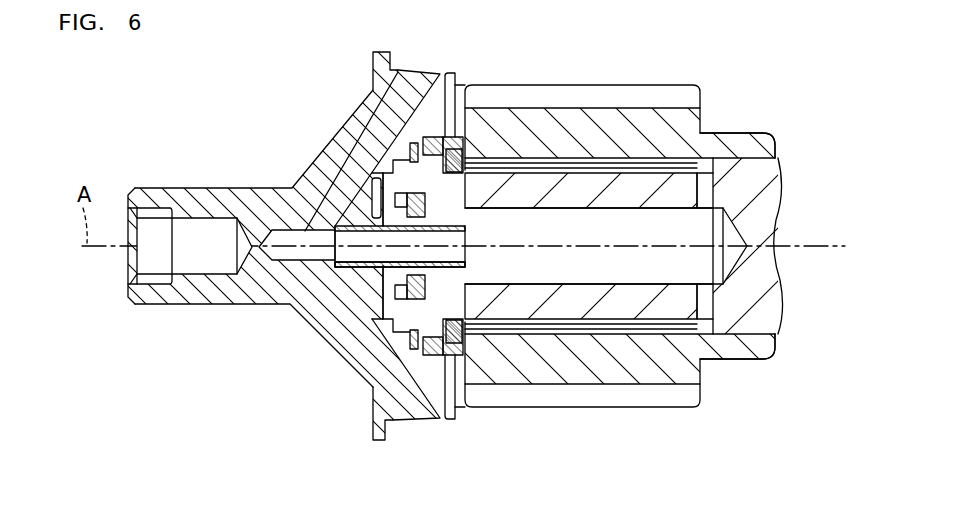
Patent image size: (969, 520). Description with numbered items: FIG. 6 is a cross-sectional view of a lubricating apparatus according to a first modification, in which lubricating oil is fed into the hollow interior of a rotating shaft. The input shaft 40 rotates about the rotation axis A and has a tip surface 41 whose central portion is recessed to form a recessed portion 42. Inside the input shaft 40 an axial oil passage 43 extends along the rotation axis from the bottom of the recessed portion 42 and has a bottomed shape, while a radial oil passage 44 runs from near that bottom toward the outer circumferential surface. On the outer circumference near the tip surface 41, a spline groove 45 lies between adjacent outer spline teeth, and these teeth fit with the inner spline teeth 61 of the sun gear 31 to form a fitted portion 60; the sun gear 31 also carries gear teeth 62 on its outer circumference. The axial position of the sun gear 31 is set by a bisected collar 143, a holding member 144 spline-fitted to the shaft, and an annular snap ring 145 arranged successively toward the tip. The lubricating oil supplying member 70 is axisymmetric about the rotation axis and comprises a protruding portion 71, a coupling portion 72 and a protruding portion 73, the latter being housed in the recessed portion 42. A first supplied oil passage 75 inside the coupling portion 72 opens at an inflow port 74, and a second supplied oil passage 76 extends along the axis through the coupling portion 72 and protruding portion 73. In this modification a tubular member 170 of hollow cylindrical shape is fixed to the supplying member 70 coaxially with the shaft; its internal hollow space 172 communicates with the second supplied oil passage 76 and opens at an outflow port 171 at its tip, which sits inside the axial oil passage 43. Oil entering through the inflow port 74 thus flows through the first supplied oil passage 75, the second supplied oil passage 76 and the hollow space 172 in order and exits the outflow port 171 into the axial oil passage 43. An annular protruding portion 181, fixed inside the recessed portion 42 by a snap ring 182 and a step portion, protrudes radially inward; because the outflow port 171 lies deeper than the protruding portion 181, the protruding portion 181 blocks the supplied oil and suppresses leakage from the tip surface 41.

The sun gear 31 is at (641, 137).
The input shaft 40 is at (763, 222).
The tip surface 41 is at (378, 348).
The recessed portion 42 is at (394, 276).
The axial oil passage 43 is at (692, 263).
The radial oil passage 44 is at (705, 190).
The spline groove 45 is at (692, 157).
The fitted portion 60 is at (532, 152).
The inner spline teeth 61 is at (604, 158).
The gear teeth 62 is at (560, 98).
The lubricating oil supplying member 70 is at (258, 177).
The protruding portion 71 is at (190, 207).
The coupling portion 72 is at (318, 168).
The protruding portion 73 is at (378, 216).
The inflow port 74 is at (410, 82).
The first supplied oil passage 75 is at (352, 155).
The second supplied oil passage 76 is at (293, 249).
The bisected collar 143 is at (457, 332).
The holding member 144 is at (432, 347).
The snap ring 145 is at (415, 340).
The tubular member 170 is at (429, 240).
The outflow port 171 is at (467, 240).
The hollow space 172 is at (330, 263).
The protruding portion 181 is at (395, 300).
The snap ring 182 is at (405, 288).